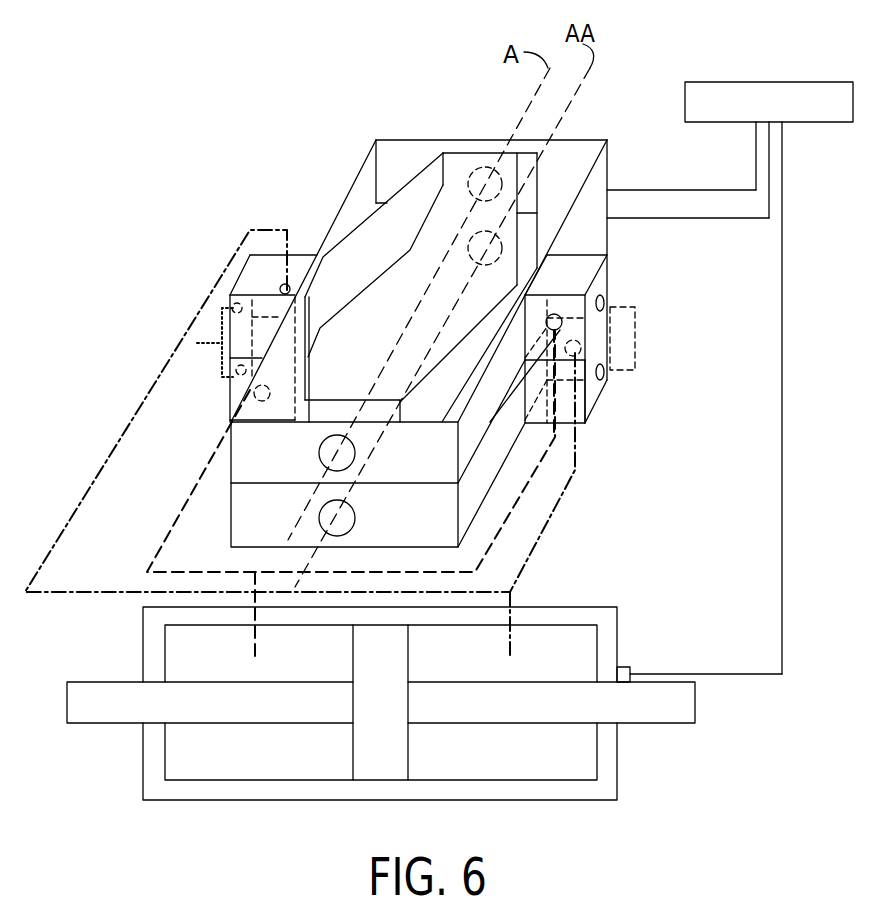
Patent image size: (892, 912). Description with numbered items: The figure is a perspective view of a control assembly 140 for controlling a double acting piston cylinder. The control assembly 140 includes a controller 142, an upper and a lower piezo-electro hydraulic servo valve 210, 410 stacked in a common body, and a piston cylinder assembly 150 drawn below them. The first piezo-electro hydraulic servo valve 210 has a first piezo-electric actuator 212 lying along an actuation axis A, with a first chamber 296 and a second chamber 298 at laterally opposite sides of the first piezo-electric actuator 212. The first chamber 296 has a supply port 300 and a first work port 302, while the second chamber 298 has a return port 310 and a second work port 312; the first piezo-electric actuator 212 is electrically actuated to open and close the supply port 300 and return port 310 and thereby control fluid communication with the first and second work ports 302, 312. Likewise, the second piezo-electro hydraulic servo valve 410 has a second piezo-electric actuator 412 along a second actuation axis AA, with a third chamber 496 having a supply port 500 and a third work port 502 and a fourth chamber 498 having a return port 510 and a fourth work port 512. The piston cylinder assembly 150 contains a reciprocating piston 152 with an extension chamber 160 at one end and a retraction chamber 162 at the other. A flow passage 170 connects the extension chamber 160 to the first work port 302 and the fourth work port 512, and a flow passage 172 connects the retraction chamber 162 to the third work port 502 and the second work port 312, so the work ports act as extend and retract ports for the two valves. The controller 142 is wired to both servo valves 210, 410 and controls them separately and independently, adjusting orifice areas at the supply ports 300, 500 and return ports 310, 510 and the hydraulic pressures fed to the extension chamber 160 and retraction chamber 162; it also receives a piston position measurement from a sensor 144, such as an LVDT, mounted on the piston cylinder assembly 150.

The control assembly 140 is at (640, 68).
The controller 142 is at (803, 82).
The sensor 144 is at (632, 670).
The piston cylinder assembly 150 is at (606, 600).
The reciprocating piston 152 is at (383, 768).
The extension chamber 160 is at (252, 768).
The retraction chamber 162 is at (553, 768).
The flow passage 170 is at (512, 507).
The flow passage 172 is at (540, 546).
The first piezo-electro hydraulic servo valve 210 is at (614, 152).
The first piezo-electric actuator 212 is at (457, 203).
The first chamber 296 is at (592, 266).
The second chamber 298 is at (252, 280).
The supply port 300 is at (604, 302).
The first work port 302 is at (562, 322).
The return port 310 is at (232, 303).
The second work port 312 is at (291, 282).
The second piezo-electro hydraulic servo valve 410 is at (614, 231).
The second piezo-electric actuator 412 is at (500, 270).
The third chamber 496 is at (594, 410).
The fourth chamber 498 is at (233, 388).
The supply port 500 is at (605, 376).
The third work port 502 is at (637, 372).
The return port 510 is at (230, 365).
The fourth work port 512 is at (255, 397).